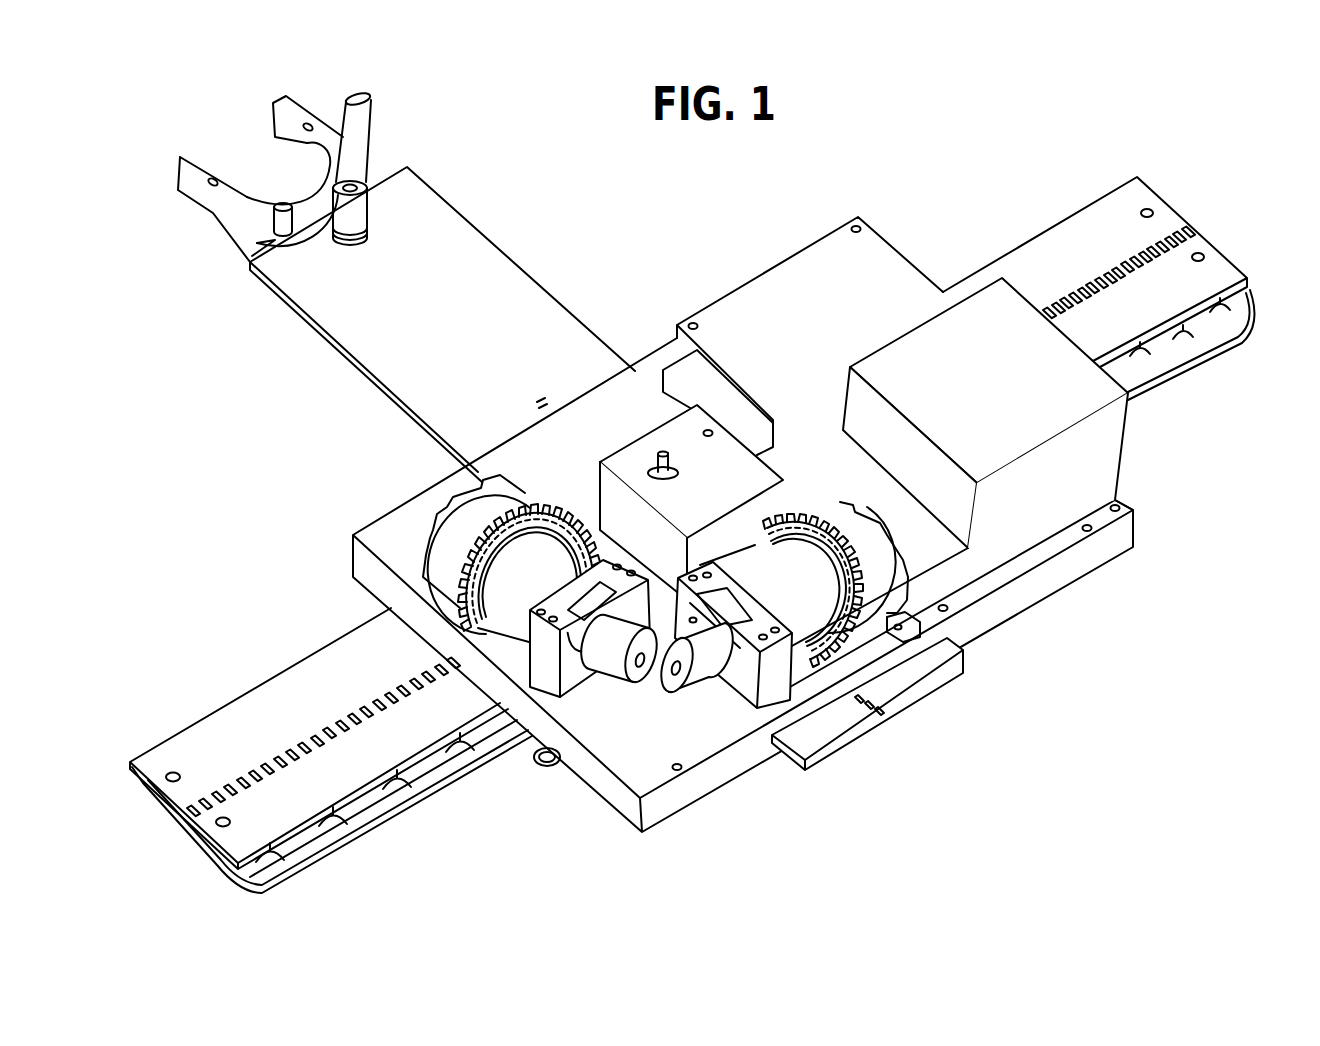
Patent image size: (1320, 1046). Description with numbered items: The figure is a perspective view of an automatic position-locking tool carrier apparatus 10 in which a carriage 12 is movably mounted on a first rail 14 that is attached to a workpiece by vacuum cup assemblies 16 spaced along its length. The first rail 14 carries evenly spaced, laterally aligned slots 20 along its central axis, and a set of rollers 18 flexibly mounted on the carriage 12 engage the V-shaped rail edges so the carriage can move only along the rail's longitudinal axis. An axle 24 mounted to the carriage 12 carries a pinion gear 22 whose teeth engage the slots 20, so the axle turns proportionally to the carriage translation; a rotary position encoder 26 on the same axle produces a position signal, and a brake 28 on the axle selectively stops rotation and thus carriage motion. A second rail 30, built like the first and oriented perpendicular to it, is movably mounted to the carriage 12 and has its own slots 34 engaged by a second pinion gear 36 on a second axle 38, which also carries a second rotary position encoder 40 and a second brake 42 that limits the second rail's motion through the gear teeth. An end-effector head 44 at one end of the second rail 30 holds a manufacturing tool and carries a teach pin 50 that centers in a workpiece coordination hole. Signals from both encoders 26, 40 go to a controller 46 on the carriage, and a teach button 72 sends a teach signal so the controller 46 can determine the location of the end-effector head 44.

The automatic position-locking tool carrier apparatus 10 is at (1272, 670).
The carriage 12 is at (1085, 578).
The first rail 14 is at (1030, 242).
The vacuum cup assemblies 16 is at (1250, 302).
The rollers 18 is at (540, 768).
The slots 20 is at (235, 775).
The pinion gear 22 is at (498, 516).
The axle 24 is at (640, 668).
The rotary position encoder 26 is at (612, 653).
The brake 28 is at (512, 593).
The second rail 30 is at (455, 203).
The slots 34 is at (866, 725).
The second pinion gear 36 is at (947, 637).
The second axle 38 is at (673, 683).
The second rotary position encoder 40 is at (703, 668).
The second brake 42 is at (865, 625).
The end-effector head 44 is at (180, 165).
The controller 46 is at (1085, 470).
The teach pin 50 is at (270, 225).
The teach button 72 is at (662, 455).